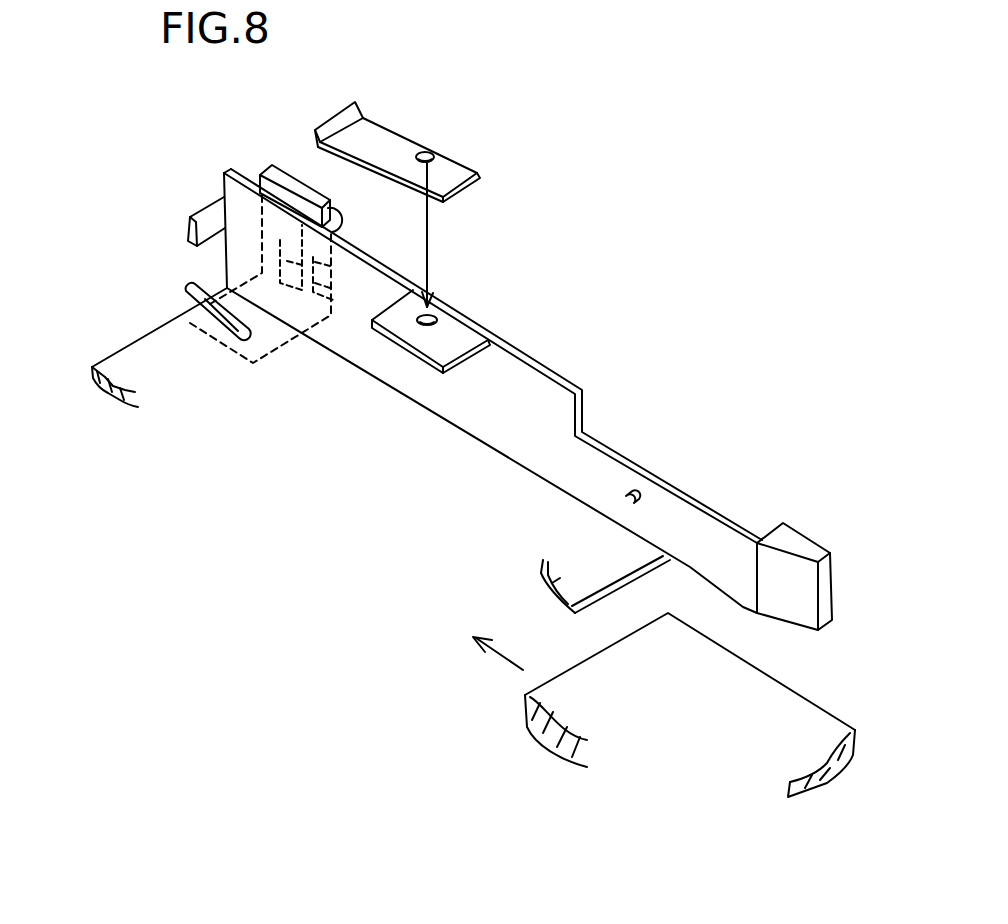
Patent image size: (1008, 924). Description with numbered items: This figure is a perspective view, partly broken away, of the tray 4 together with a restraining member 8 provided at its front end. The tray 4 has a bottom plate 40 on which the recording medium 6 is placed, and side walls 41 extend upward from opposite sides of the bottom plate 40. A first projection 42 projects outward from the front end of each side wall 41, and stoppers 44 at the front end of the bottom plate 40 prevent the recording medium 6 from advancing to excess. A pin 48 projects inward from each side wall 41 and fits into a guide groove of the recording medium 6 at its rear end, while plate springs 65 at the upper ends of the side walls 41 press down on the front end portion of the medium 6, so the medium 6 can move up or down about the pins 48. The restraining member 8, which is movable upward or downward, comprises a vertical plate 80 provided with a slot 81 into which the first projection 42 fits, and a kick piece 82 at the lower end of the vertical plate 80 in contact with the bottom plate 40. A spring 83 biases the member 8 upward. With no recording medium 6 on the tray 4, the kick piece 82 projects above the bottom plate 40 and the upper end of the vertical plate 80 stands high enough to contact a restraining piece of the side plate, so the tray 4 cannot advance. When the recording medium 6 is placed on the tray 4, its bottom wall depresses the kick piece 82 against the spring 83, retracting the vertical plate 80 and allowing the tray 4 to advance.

The tray 4 is at (593, 262).
The bottom plate 40 is at (475, 468).
The side wall 41 is at (497, 357).
The first projection 42 is at (343, 217).
The stopper 44 is at (205, 205).
The pin 48 is at (633, 491).
The recording medium 6 is at (782, 703).
The plate spring 65 is at (392, 137).
The restraining member 8 is at (102, 238).
The vertical plate 80 is at (270, 243).
The slot 81 is at (272, 162).
The kick piece 82 is at (183, 303).
The spring 83 is at (353, 270).